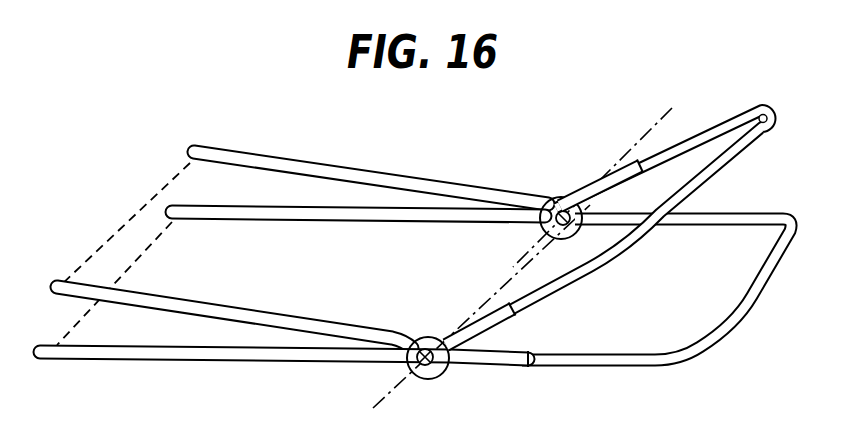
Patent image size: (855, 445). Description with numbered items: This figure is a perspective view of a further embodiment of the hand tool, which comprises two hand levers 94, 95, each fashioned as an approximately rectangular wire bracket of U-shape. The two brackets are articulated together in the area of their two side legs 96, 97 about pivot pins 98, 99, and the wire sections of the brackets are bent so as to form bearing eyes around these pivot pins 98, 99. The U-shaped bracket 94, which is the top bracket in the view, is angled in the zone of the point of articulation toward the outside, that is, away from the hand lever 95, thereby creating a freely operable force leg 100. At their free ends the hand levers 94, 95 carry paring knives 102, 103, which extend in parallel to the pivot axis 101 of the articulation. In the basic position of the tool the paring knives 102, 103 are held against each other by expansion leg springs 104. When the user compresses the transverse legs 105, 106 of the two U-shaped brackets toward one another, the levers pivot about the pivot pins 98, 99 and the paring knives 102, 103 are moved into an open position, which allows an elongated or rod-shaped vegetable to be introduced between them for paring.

The hand lever 94 is at (311, 254).
The hand lever 95 is at (272, 226).
The side leg 96 is at (345, 167).
The side leg 97 is at (292, 309).
The pivot pin 98 is at (552, 196).
The pivot pin 99 is at (433, 369).
The force leg 100 is at (629, 203).
The pivot axis 101 is at (630, 142).
The paring knife 102 is at (157, 192).
The paring knife 103 is at (134, 266).
The expansion leg spring 104 is at (616, 173).
The transverse leg 105 is at (766, 134).
The transverse leg 106 is at (753, 303).